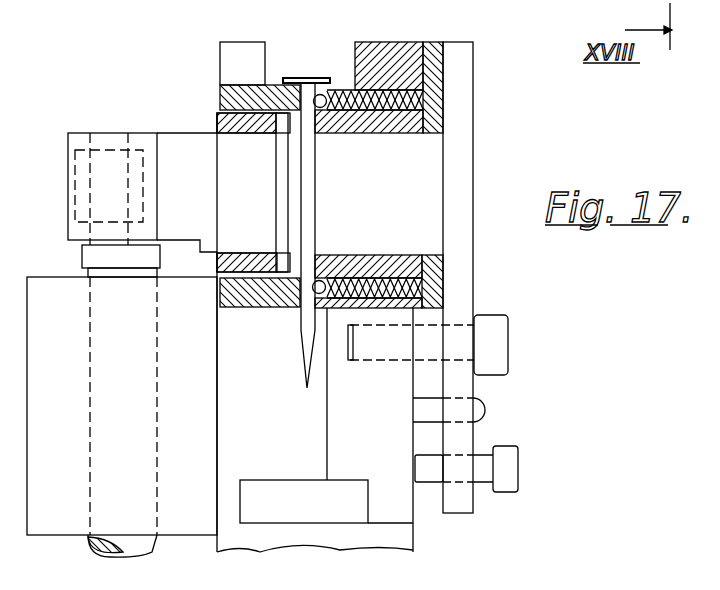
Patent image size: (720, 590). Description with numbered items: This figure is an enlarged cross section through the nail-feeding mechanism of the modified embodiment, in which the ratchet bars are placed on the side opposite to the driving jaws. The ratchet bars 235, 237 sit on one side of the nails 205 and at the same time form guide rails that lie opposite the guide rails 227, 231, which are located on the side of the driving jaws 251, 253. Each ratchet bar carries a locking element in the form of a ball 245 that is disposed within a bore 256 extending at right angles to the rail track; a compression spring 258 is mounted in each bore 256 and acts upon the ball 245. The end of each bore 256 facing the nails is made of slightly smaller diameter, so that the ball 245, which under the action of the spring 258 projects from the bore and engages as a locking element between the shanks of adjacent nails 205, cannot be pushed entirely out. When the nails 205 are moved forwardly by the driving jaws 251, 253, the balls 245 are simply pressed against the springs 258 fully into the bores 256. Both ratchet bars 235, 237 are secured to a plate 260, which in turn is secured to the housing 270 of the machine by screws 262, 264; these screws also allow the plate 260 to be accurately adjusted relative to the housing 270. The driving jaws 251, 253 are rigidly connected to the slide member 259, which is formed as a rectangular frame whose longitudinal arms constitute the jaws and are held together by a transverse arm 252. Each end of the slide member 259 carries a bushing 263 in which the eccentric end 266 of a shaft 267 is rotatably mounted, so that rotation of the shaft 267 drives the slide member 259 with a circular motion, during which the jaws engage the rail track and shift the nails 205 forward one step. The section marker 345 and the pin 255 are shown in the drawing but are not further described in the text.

The nail 205 is at (316, 197).
The guide rail 227 is at (222, 97).
The guide rail 231 is at (263, 304).
The ratchet bar 235 is at (403, 62).
The ratchet bar 237 is at (400, 264).
The ball 245 is at (313, 78).
The driving jaw 251 is at (217, 124).
The transverse arm 252 is at (236, 170).
The driving jaw 253 is at (220, 265).
The pin 255 is at (282, 258).
The bore 256 is at (395, 112).
The compression spring 258 is at (368, 62).
The slide member 259 is at (138, 128).
The plate 260 is at (470, 116).
The screw 262 is at (494, 347).
The bushing 263 is at (73, 218).
The screw 264 is at (508, 450).
The eccentric end 266 is at (97, 143).
The shaft 267 is at (93, 385).
The housing 270 is at (358, 535).
The section reference 345 is at (697, 0).